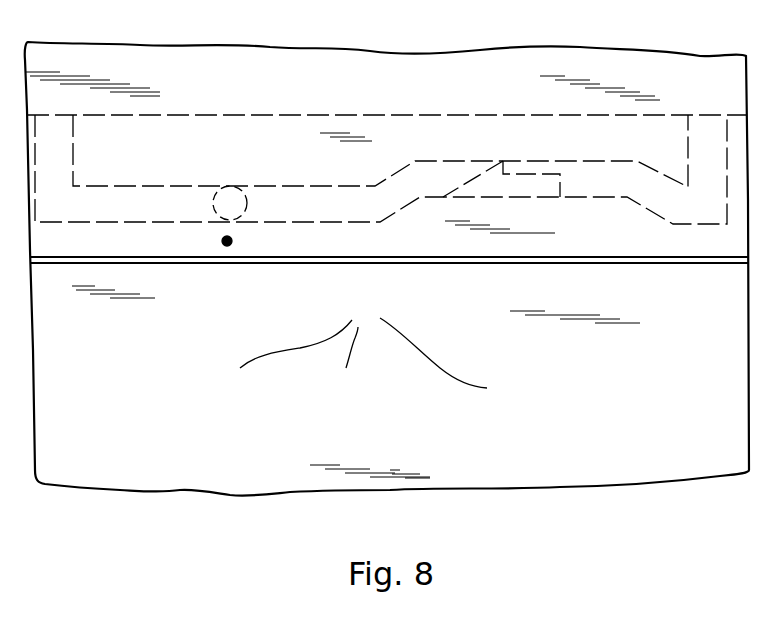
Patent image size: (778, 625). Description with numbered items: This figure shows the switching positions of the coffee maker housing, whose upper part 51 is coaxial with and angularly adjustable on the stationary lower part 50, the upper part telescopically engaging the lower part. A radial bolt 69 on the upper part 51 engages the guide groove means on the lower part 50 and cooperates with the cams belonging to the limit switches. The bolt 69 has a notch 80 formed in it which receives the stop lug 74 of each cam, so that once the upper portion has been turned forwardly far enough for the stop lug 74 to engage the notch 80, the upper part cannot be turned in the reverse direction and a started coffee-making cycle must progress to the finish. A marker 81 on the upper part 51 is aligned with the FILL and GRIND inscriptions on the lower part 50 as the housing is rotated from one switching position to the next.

The lower part 50 is at (117, 485).
The upper part 51 is at (192, 60).
The bolt 69 is at (233, 187).
The stop lug 74 is at (205, 221).
The notch 80 is at (248, 206).
The marker 81 is at (232, 241).